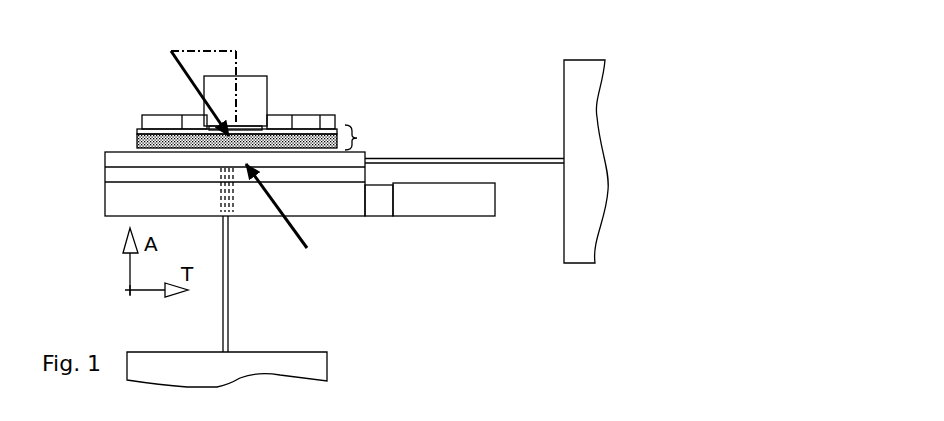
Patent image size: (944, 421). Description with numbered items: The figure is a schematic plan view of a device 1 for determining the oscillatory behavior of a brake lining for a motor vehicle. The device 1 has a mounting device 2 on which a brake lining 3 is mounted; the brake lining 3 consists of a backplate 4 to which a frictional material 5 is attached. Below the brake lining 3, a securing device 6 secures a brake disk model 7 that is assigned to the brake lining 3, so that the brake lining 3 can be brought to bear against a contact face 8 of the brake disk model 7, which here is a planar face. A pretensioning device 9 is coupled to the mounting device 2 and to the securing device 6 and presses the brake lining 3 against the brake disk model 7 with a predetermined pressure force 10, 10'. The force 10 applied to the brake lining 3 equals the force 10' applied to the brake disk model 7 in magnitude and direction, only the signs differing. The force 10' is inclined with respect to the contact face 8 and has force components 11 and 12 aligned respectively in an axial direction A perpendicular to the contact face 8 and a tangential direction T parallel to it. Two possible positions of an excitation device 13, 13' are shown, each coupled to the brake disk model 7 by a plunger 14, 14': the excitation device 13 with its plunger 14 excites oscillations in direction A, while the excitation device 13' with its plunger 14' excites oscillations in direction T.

The device 1 is at (416, 262).
The mounting device 2 is at (160, 117).
The brake lining 3 is at (364, 132).
The backplate 4 is at (142, 130).
The frictional material 5 is at (142, 140).
The securing device 6 is at (113, 203).
The brake disk model 7 is at (112, 160).
The contact face 8 is at (307, 151).
The pretensioning device 9 is at (263, 95).
The pressure force 10 is at (276, 225).
The pressure force 10' is at (199, 72).
The force component 11 is at (236, 80).
The force component 12 is at (208, 51).
The excitation device 13 is at (262, 350).
The excitation device 13' is at (599, 198).
The plunger 14 is at (253, 284).
The plunger 14' is at (464, 223).